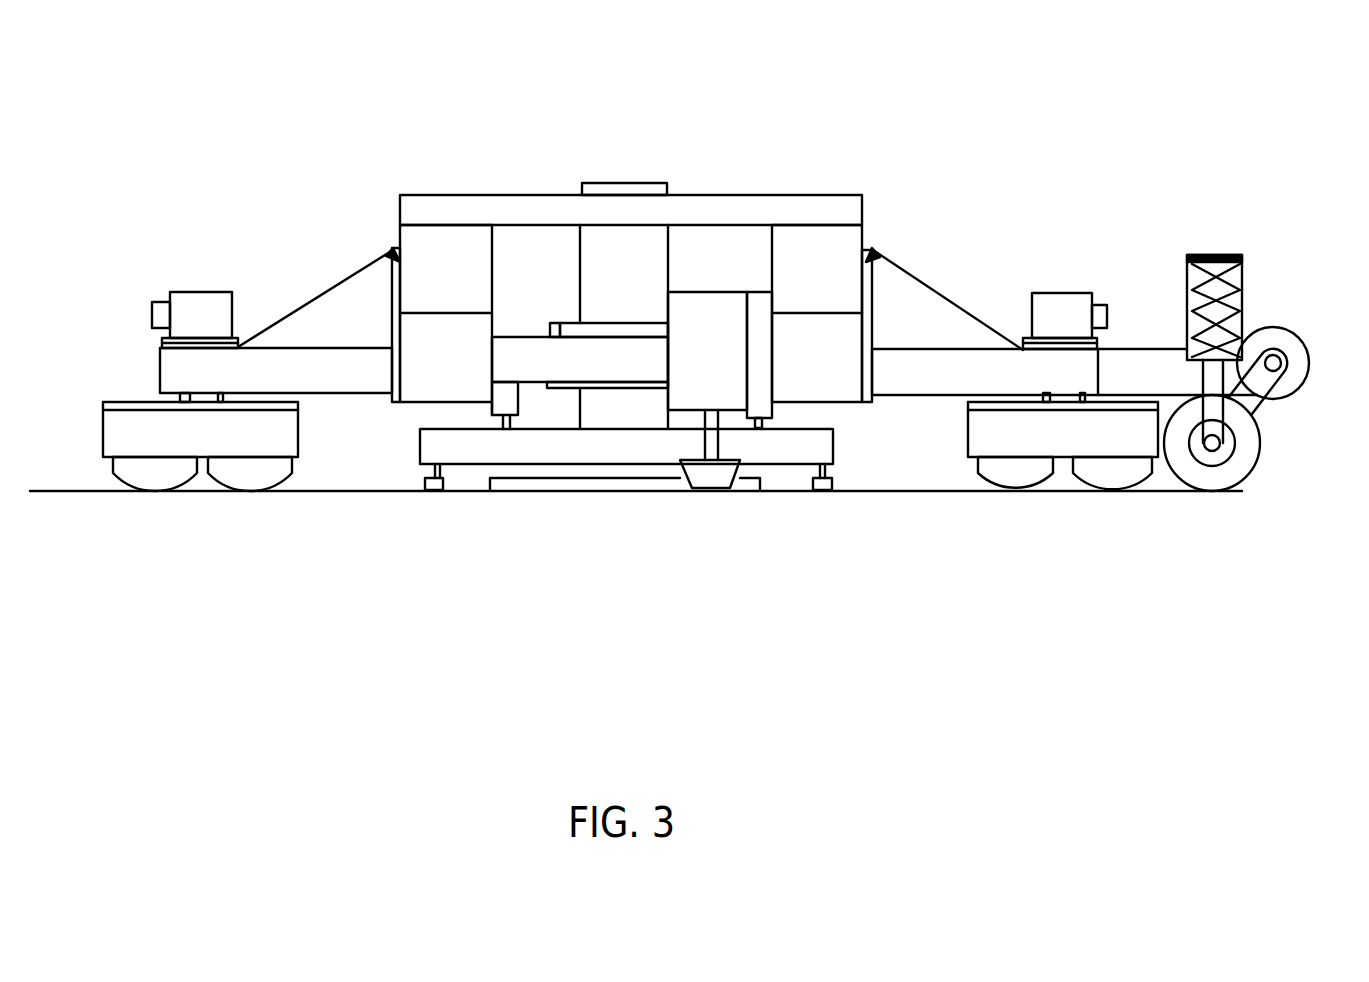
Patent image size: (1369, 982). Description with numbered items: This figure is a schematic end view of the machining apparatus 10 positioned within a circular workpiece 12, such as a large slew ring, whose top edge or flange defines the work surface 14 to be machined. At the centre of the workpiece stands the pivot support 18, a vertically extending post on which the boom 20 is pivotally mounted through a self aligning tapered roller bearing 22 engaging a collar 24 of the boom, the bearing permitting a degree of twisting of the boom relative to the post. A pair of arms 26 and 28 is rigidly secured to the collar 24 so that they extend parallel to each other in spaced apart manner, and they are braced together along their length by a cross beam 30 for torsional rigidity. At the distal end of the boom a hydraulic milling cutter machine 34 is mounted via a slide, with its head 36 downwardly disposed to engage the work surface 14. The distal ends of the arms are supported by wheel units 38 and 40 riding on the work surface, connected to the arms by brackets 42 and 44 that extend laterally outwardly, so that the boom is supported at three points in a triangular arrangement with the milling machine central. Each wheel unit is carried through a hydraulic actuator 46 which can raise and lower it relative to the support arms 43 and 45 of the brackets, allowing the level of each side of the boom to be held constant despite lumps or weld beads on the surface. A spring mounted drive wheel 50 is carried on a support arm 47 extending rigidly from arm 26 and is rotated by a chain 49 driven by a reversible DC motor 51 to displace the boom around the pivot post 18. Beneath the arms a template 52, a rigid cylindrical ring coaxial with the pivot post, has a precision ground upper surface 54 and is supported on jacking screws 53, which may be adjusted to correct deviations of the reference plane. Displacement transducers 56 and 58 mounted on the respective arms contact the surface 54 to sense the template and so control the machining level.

The machining apparatus 10 is at (230, 193).
The circular workpiece 12 is at (347, 492).
The work surface 14 is at (845, 500).
The pivot support 18 is at (672, 190).
The boom 20 is at (873, 250).
The self aligning tapered roller bearing 22 is at (566, 320).
The collar 24 is at (548, 330).
The arm 26 is at (823, 247).
The arm 28 is at (372, 370).
The cross beam 30 is at (760, 210).
The hydraulic milling cutter machine 34 is at (727, 363).
The head 36 is at (708, 477).
The wheel unit 38 is at (1110, 467).
The wheel unit 40 is at (237, 491).
The bracket 42 is at (947, 373).
The support arm 43 is at (1082, 317).
The bracket 44 is at (417, 245).
The support arm 45 is at (183, 373).
The hydraulic actuator 46 is at (1062, 367).
The support arm 47 is at (1135, 370).
The chain 49 is at (1258, 398).
The drive wheel 50 is at (1252, 472).
The reversible DC motor 51 is at (1273, 328).
The template 52 is at (462, 465).
The jacking screw 53 is at (423, 488).
The upper surface 54 is at (423, 410).
The displacement transducer 56 is at (765, 420).
The displacement transducer 58 is at (508, 398).